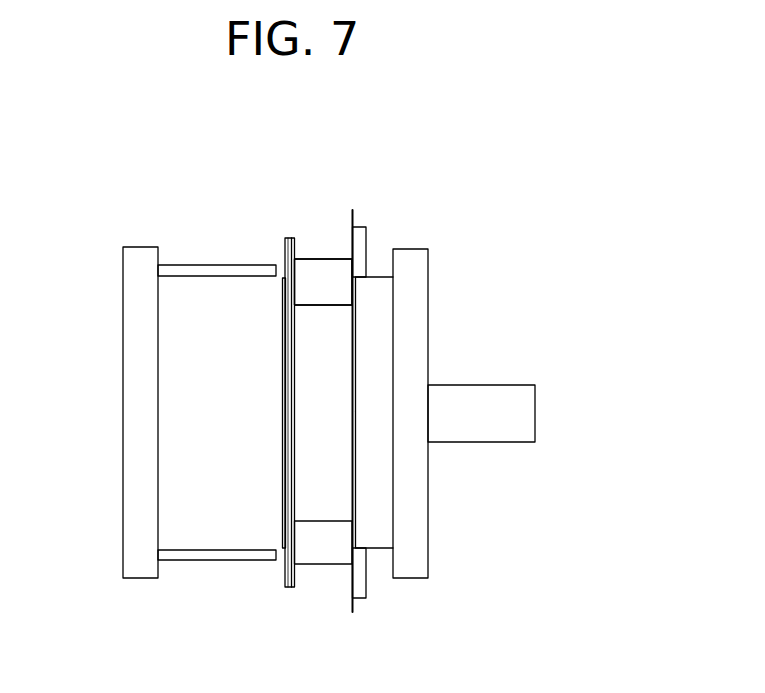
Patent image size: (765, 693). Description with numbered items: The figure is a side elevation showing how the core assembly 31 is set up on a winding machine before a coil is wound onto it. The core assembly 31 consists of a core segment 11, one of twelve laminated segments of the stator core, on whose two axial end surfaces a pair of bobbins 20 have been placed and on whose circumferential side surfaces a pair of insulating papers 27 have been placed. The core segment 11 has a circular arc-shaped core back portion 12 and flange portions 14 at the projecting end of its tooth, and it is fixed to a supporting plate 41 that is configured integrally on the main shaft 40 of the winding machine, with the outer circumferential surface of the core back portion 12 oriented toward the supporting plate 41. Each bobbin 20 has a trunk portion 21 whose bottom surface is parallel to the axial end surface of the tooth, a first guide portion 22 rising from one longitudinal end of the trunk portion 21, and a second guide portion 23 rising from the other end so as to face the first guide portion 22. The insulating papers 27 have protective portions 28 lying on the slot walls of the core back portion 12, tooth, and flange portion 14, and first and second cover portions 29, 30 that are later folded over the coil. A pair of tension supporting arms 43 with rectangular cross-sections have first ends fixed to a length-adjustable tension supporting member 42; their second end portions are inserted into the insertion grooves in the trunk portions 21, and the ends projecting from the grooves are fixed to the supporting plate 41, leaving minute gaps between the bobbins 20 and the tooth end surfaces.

The core segment 11 is at (392, 302).
The core back portion 12 is at (383, 492).
The flange portion 14 is at (284, 250).
The bobbin 20 is at (339, 248).
The trunk portion 21 is at (325, 258).
The first guide portion 22 is at (291, 240).
The second guide portion 23 is at (362, 233).
The insulating paper 27 is at (343, 455).
The protective portion 28 is at (335, 378).
The first cover portion 29 is at (284, 487).
The second cover portion 30 is at (357, 604).
The core assembly 31 is at (373, 248).
The main shaft 40 is at (520, 395).
The supporting plate 41 is at (420, 328).
The tension supporting member 42 is at (130, 310).
The tension supporting arm 43 is at (197, 262).